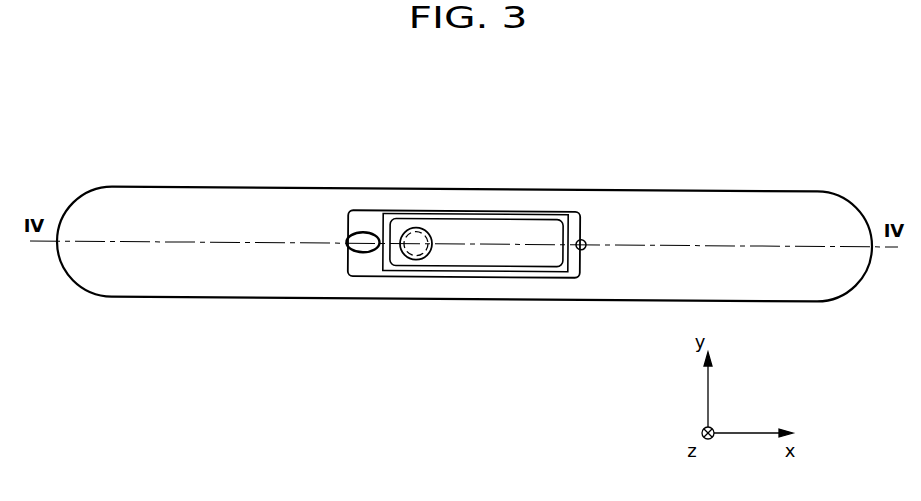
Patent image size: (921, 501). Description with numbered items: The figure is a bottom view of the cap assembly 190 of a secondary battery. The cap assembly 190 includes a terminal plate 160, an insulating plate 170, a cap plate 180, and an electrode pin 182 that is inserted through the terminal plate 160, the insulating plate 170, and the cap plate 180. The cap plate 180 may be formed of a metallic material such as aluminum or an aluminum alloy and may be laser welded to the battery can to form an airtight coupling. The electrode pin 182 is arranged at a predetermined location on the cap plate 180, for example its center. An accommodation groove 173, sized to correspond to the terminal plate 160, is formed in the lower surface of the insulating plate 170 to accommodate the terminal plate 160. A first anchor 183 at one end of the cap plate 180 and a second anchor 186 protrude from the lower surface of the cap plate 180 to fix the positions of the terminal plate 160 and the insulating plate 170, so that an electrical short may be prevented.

The cap assembly 190 is at (228, 146).
The cap plate 180 is at (733, 202).
The insulating plate 170 is at (557, 277).
The terminal plate 160 is at (467, 270).
The accommodation groove 173 is at (512, 256).
The electrode pin 182 is at (420, 236).
The second anchor 186 is at (362, 243).
The first anchor 183 is at (585, 238).